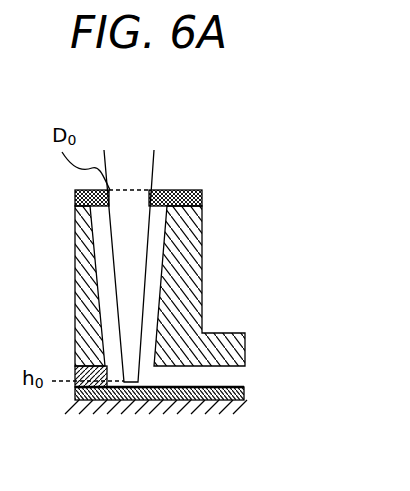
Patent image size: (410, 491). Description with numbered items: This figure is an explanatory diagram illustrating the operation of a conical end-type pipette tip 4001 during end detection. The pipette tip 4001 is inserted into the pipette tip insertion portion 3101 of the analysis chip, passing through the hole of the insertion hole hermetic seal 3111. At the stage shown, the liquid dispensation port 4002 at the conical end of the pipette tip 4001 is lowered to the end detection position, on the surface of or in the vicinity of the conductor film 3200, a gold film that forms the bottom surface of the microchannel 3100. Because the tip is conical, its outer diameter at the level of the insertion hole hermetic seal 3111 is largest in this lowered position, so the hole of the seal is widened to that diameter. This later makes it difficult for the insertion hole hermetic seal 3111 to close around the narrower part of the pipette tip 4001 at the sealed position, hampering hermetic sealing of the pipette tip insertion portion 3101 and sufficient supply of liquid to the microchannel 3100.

The pipette tip 4001 is at (155, 168).
The insertion hole hermetic seal 3111 is at (197, 195).
The pipette tip insertion portion 3101 is at (145, 303).
The microchannel 3100 is at (237, 380).
The conductor film 3200 is at (243, 392).
The liquid dispensation port 4002 is at (108, 402).